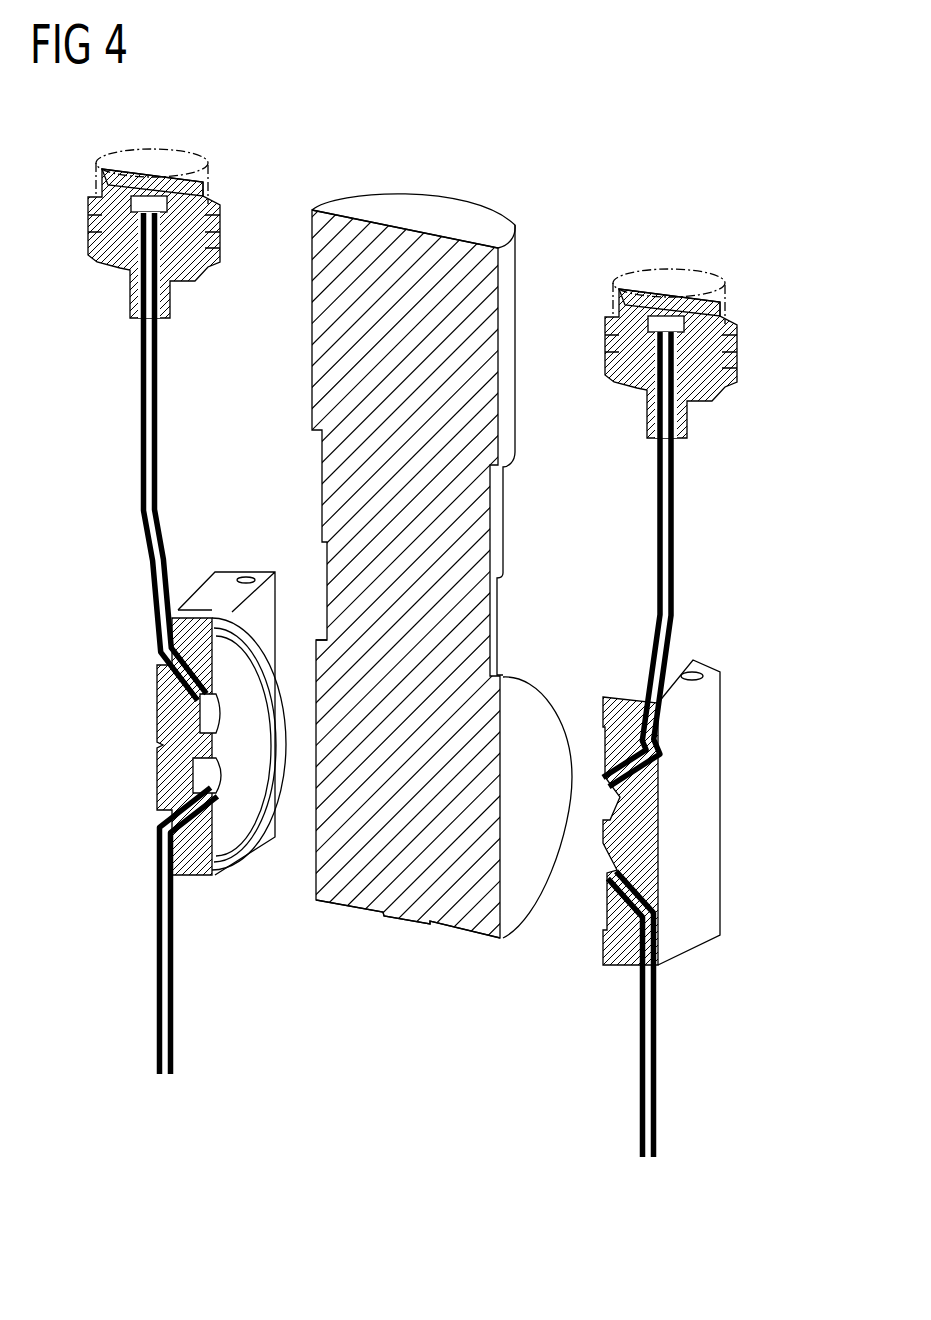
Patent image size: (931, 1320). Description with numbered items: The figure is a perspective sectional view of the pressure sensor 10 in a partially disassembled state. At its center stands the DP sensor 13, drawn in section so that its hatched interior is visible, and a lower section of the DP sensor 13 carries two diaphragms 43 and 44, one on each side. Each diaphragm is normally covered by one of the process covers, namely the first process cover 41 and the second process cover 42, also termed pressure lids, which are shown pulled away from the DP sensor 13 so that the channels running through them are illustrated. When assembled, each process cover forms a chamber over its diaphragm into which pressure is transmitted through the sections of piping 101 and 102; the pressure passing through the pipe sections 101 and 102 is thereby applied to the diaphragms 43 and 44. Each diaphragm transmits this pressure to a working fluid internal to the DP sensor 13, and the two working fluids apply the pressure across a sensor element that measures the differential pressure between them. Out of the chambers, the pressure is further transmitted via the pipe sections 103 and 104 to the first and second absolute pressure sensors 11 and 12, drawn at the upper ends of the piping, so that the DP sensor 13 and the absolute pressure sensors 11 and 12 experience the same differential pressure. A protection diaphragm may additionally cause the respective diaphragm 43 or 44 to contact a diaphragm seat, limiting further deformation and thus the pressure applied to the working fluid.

The pressure sensor 10 is at (650, 175).
The first absolute pressure sensor 11 is at (88, 206).
The second absolute pressure sensor 12 is at (738, 358).
The DP sensor 13 is at (445, 215).
The first process cover 41 is at (157, 770).
The second process cover 42 is at (709, 815).
The diaphragm 43 is at (316, 848).
The diaphragm 44 is at (528, 882).
The pipe section 101 is at (157, 982).
The pipe section 102 is at (657, 1058).
The pipe section 103 is at (140, 424).
The pipe section 104 is at (677, 497).